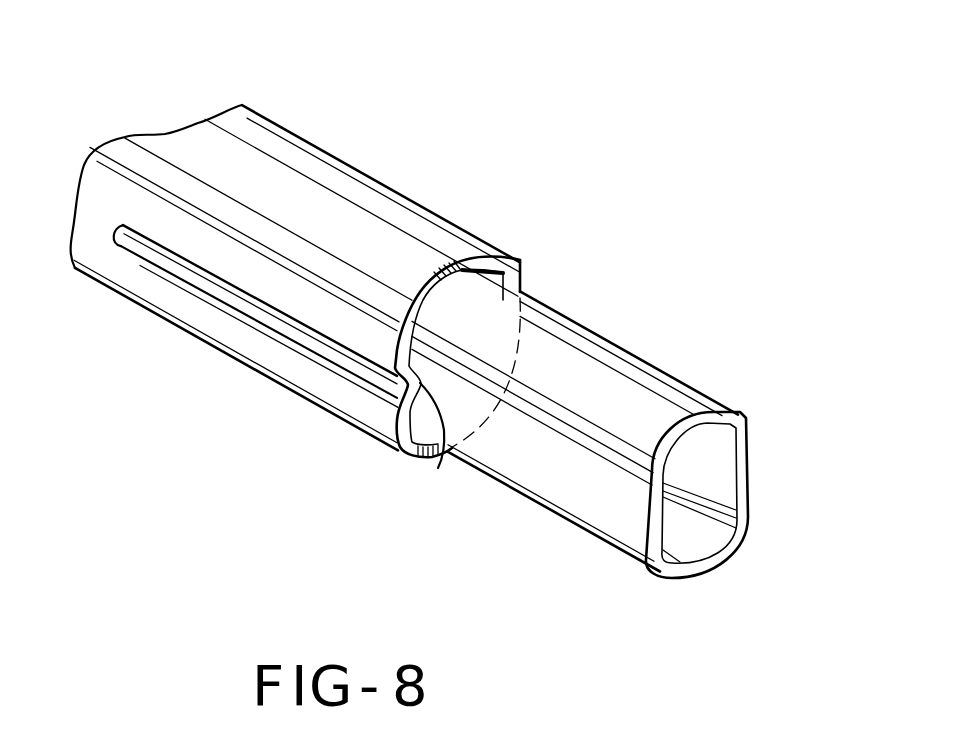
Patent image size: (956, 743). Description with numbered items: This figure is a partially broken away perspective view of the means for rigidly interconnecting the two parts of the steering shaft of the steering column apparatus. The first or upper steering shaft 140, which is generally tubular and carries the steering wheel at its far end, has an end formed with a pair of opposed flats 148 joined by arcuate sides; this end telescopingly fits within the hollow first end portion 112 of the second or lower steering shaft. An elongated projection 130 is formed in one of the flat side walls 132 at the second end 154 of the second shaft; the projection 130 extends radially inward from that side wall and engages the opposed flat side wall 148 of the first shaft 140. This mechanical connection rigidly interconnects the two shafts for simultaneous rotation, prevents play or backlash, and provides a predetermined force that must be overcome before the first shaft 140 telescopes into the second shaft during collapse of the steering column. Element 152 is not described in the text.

The hollow first end portion 112 is at (295, 247).
The elongated projection 130 is at (447, 442).
The flat side wall 132 is at (163, 298).
The first steering shaft 140 is at (580, 441).
The opposed flats 148 is at (574, 506).
The housing top wall 152 is at (233, 140).
The second end 154 is at (357, 402).